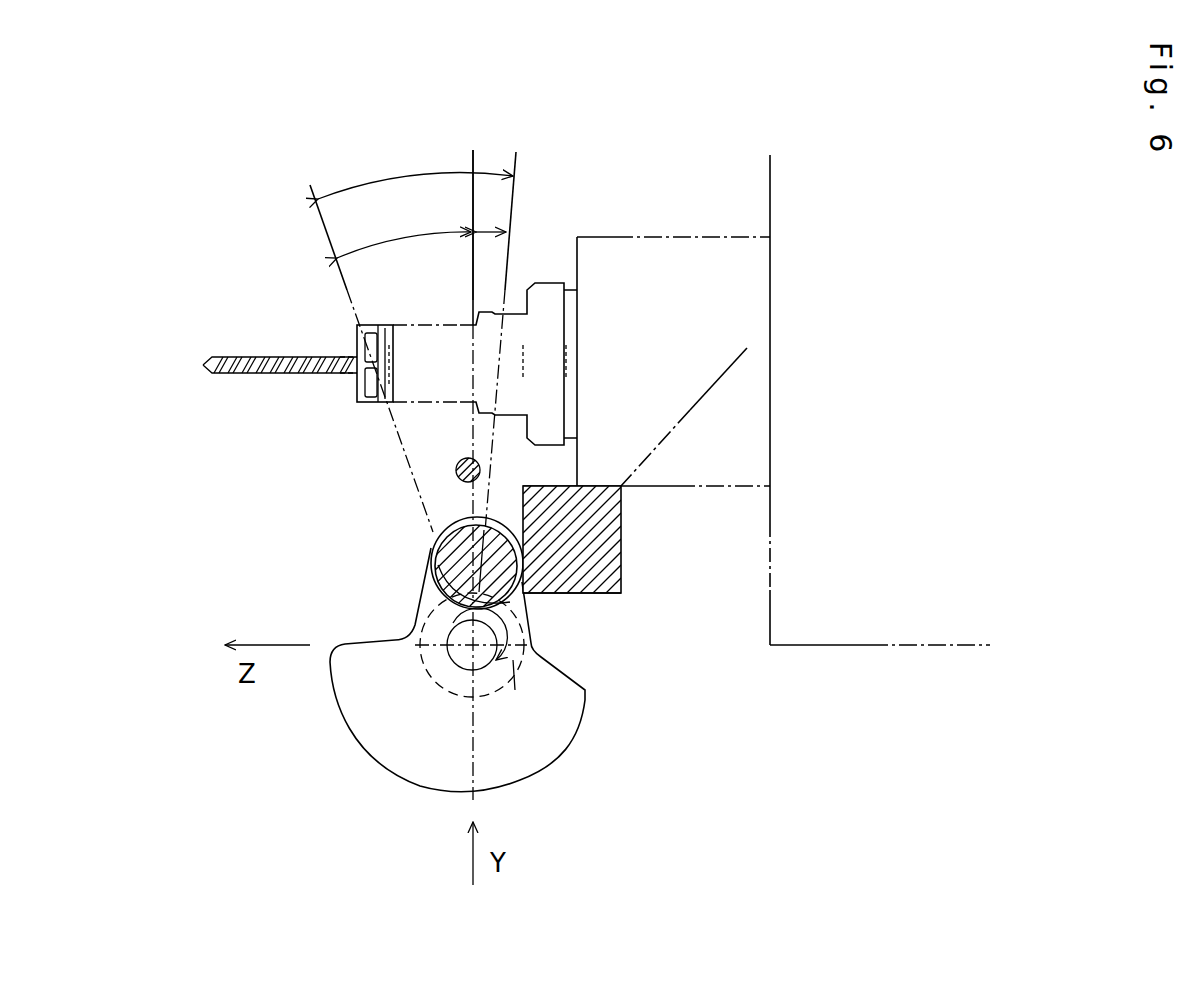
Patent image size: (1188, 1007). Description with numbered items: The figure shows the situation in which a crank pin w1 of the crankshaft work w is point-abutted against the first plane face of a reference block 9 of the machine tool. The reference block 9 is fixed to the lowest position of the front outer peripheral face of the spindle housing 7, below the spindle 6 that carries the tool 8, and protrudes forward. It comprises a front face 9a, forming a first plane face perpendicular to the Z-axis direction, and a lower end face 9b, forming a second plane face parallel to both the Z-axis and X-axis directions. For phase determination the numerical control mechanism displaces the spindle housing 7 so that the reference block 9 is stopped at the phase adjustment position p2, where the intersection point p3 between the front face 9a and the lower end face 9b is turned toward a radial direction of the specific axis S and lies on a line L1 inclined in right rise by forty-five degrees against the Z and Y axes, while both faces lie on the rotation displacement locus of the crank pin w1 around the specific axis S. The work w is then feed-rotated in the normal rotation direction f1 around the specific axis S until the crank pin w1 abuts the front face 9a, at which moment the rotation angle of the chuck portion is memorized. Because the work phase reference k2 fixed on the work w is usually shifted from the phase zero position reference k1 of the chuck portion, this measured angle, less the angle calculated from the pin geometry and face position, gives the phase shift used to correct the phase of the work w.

The spindle 6 is at (549, 292).
The spindle housing 7 is at (735, 487).
The drill tool 8 is at (243, 356).
The reference block 9 is at (623, 541).
The front face 9a is at (522, 510).
The lower end face 9b is at (577, 595).
The work w is at (362, 786).
The crank pin w1 is at (432, 585).
The normal rotation direction f1 is at (452, 632).
The specific axis S is at (440, 683).
The phase adjustment position p2 is at (652, 610).
The intersection point p3 is at (515, 690).
The phase zero position reference k1 is at (472, 160).
The phase reference k2 is at (312, 201).
The line L1 is at (710, 388).